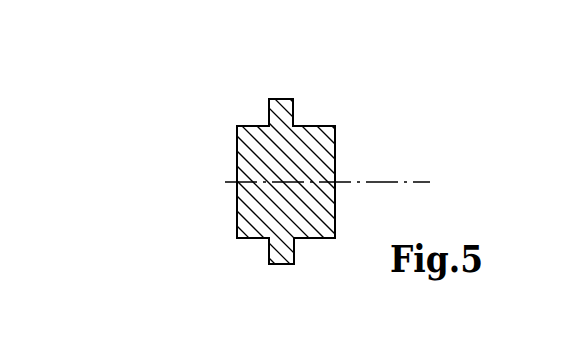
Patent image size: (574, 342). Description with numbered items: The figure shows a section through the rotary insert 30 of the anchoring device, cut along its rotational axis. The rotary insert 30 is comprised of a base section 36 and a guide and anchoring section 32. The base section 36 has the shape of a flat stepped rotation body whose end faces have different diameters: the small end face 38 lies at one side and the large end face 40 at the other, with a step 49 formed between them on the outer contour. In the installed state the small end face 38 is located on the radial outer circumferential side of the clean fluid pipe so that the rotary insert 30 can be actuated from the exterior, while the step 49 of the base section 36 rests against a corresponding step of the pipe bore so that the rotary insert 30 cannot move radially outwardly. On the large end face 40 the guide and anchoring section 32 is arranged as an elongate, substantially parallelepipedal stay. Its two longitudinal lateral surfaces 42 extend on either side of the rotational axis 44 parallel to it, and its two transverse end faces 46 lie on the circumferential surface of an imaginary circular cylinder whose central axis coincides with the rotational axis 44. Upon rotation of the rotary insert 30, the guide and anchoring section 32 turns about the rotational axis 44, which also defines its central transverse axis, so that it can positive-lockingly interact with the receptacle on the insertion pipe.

The rotary insert 30 is at (178, 110).
The guide and anchoring section 32 is at (333, 146).
The base section 36 is at (252, 148).
The small end face 38 is at (234, 194).
The large end face 40 is at (296, 114).
The longitudinal lateral surfaces 42 is at (322, 208).
The rotational axis 44 is at (418, 181).
The transverse end faces 46 is at (315, 123).
The step 49 is at (267, 248).